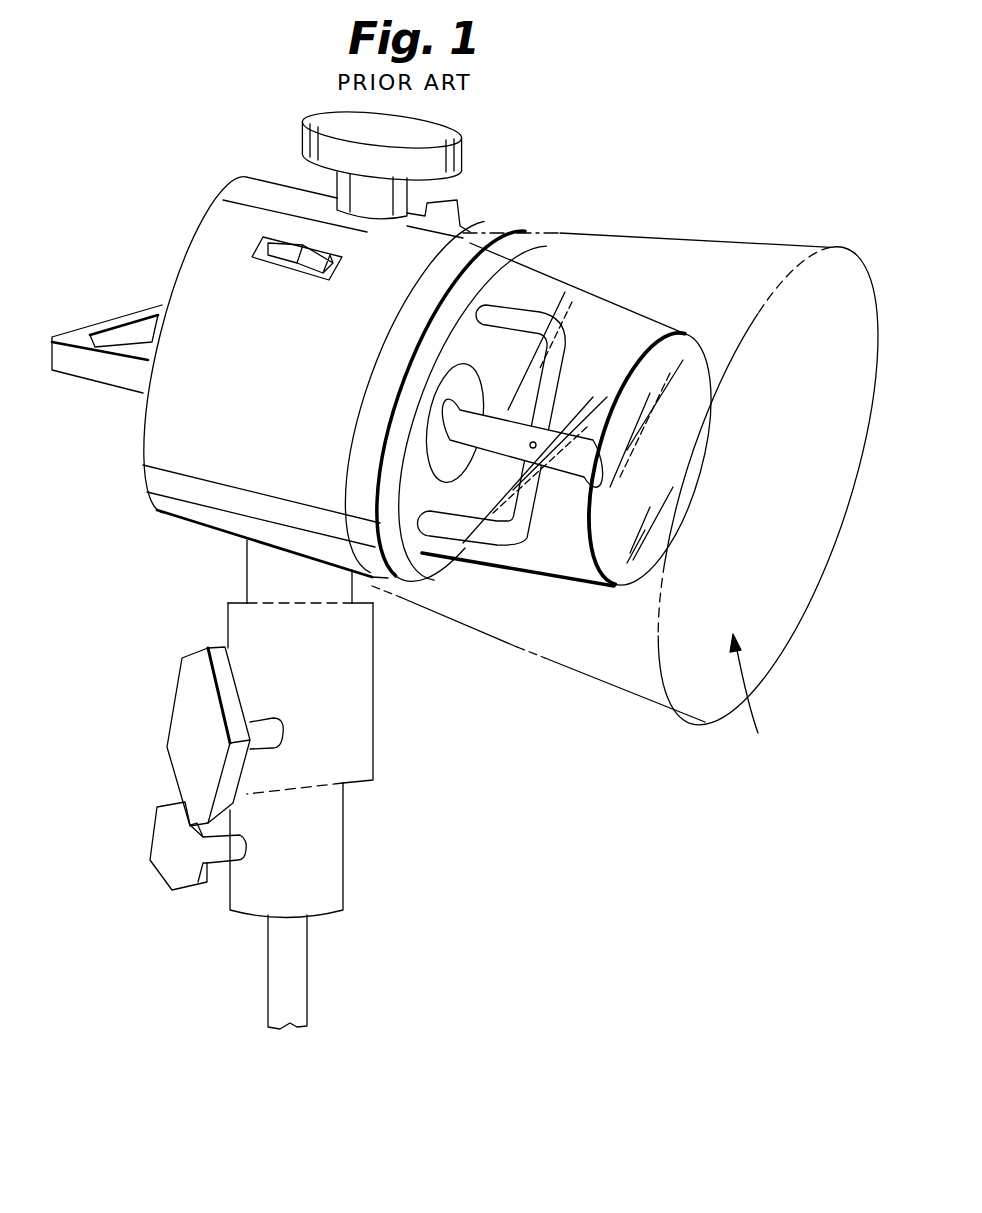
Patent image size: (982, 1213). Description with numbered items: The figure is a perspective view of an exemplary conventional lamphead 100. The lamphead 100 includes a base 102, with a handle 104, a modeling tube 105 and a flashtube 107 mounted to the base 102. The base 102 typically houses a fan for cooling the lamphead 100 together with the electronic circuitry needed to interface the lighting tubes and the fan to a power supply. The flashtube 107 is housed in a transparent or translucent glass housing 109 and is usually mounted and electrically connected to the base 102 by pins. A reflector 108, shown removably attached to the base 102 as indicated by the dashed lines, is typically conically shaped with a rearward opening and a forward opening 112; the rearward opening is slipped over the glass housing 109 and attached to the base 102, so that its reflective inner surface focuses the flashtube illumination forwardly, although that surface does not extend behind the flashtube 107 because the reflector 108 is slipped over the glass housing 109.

The conventional lamphead 100 is at (613, 165).
The base 102 is at (208, 242).
The handle 104 is at (72, 372).
The modeling tube 105 is at (572, 465).
The flashtube 107 is at (567, 350).
The reflector 108 is at (778, 245).
The glass housing 109 is at (650, 317).
The forward opening 112 is at (768, 690).